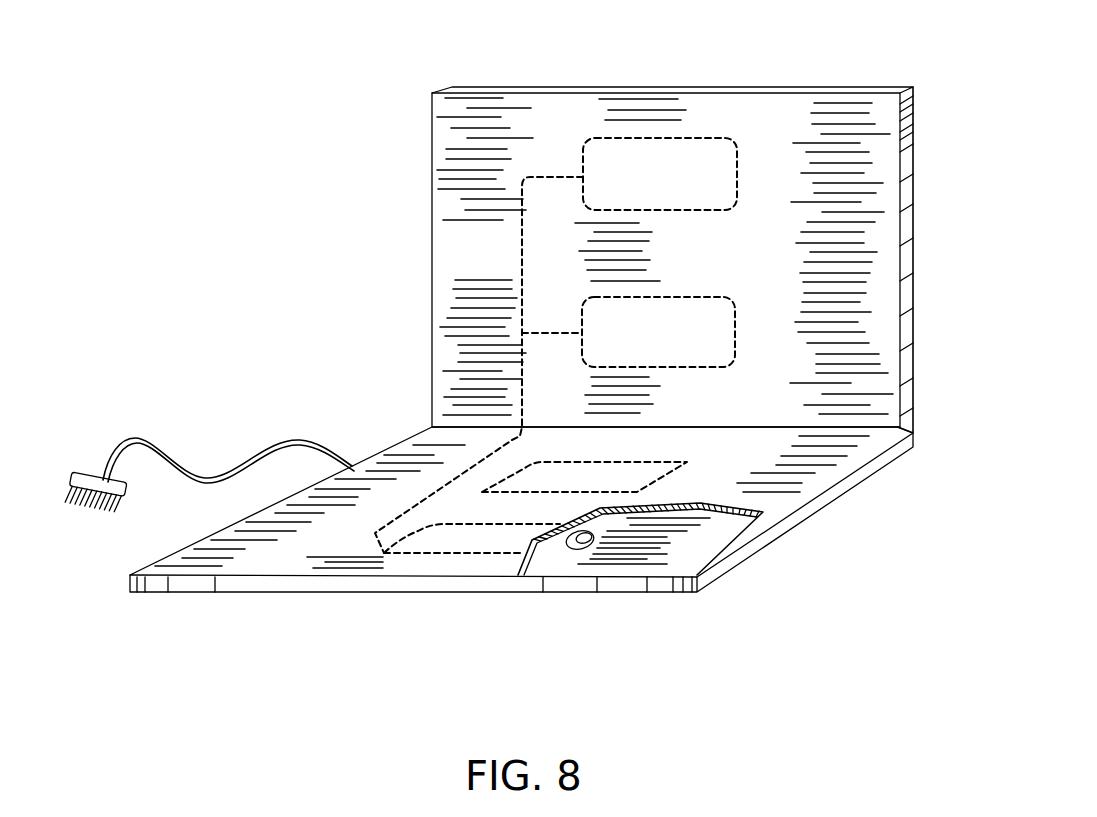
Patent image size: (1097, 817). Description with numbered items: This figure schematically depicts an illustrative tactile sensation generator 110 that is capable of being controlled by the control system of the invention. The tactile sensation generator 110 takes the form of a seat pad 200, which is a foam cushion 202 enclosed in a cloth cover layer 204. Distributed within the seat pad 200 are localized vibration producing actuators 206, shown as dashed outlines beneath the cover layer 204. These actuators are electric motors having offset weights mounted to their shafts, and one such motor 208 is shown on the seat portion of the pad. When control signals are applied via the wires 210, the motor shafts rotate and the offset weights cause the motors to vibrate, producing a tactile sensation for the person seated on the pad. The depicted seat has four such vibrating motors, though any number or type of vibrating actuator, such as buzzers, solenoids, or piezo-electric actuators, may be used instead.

The tactile sensation generator 110 is at (409, 85).
The seat pad 200 is at (852, 122).
The foam cushion 202 is at (727, 515).
The cloth cover layer 204 is at (762, 500).
The localized vibration producing actuators 206 is at (693, 197).
The motor 208 is at (558, 545).
The wires 210 is at (257, 468).